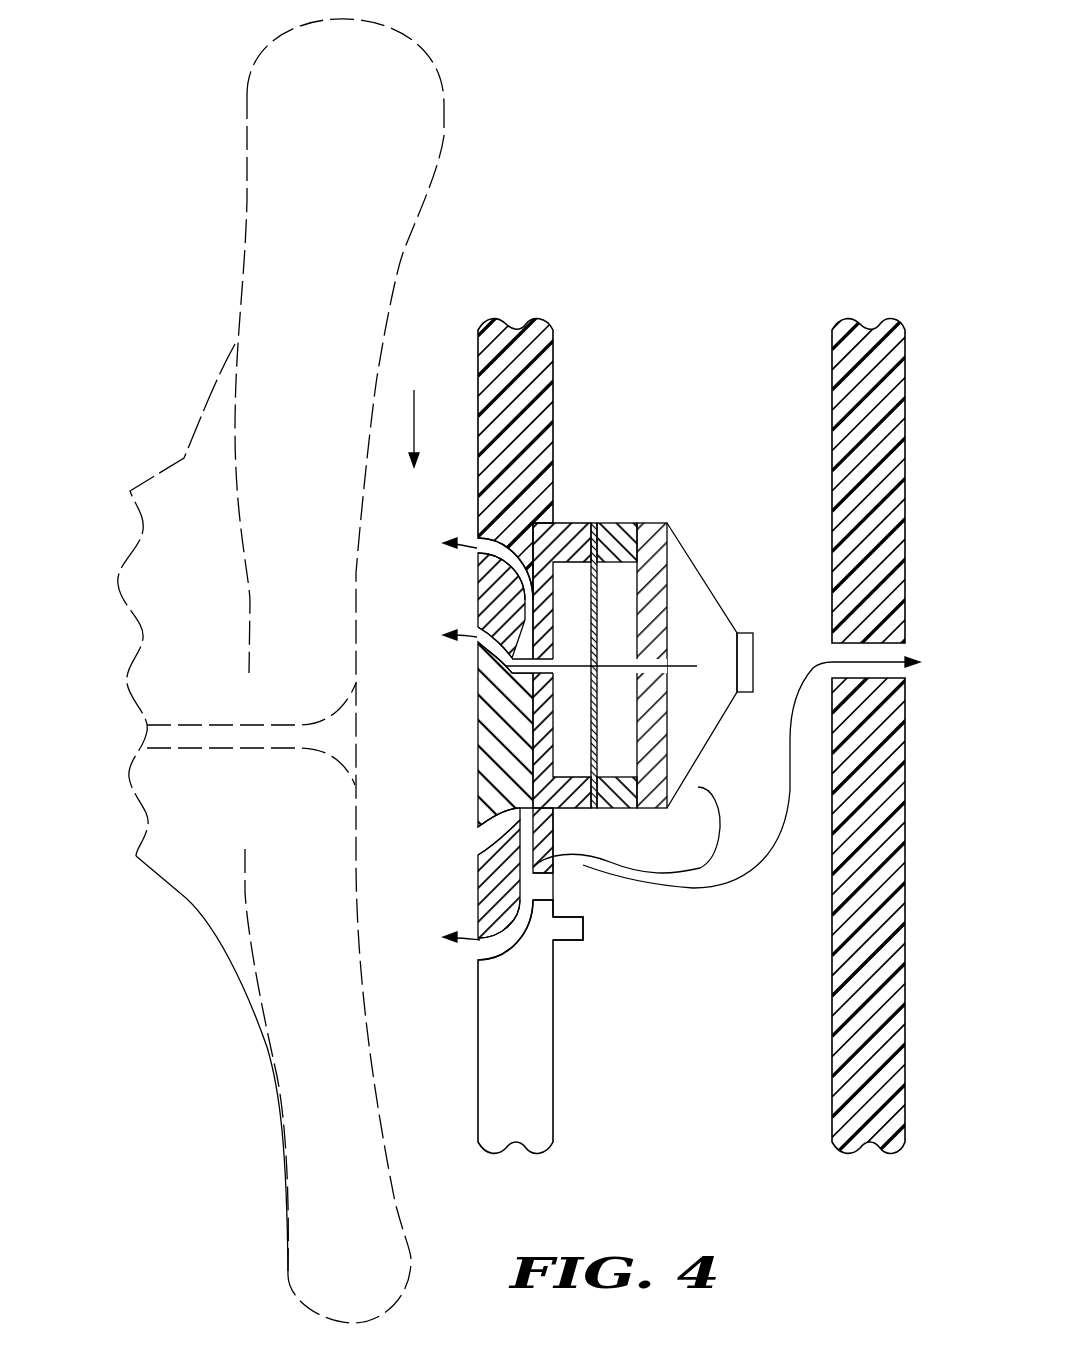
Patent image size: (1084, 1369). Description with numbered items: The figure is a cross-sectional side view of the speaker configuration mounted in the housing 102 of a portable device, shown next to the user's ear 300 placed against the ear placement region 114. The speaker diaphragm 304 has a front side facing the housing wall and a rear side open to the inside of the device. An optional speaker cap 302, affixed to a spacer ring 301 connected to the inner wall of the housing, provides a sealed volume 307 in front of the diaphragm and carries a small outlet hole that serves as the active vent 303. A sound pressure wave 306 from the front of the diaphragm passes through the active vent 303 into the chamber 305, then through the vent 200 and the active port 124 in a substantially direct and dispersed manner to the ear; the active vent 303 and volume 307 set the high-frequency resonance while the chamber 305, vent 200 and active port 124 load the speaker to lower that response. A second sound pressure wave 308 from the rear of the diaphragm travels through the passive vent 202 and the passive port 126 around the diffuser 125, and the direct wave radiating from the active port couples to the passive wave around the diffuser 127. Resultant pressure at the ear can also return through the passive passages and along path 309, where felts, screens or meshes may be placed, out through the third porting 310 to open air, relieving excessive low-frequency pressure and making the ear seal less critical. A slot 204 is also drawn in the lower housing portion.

The housing 102 is at (555, 355).
The ear placement region 114 is at (414, 412).
The active port 124 is at (480, 628).
The diffuser 125 is at (477, 564).
The passive port 126 is at (445, 547).
The diffuser 127 is at (477, 743).
The vent 200 is at (585, 557).
The passive vent 202 is at (600, 916).
The slot 204 is at (540, 878).
The user's ear 300 is at (446, 124).
The spacer ring 301 is at (613, 521).
The speaker cap 302 is at (653, 521).
The active vent 303 is at (690, 668).
The diaphragm 304 is at (698, 558).
The chamber 305 is at (620, 760).
The sound pressure wave 306 is at (465, 650).
The volume 307 is at (713, 610).
The sound pressure wave 308 is at (468, 533).
The path 309 is at (593, 522).
The third porting 310 is at (832, 657).